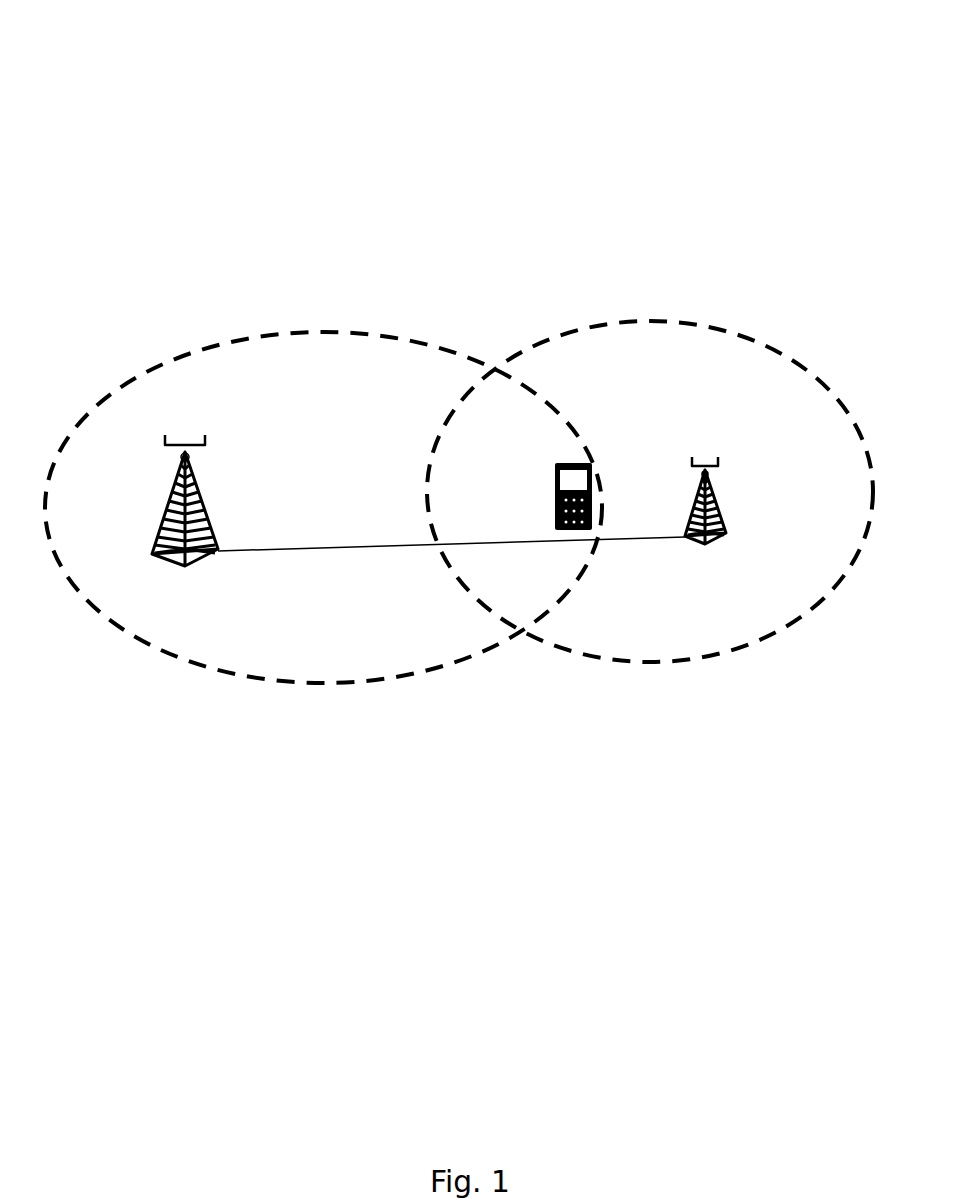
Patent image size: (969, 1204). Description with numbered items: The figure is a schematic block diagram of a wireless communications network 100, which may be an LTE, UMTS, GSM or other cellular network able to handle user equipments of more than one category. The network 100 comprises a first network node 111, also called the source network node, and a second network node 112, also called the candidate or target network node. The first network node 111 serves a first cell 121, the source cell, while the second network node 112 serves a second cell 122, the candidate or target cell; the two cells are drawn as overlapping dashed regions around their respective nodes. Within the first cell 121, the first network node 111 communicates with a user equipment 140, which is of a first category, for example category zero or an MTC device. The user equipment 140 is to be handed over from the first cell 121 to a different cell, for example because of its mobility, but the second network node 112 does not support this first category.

The wireless communications network 100 is at (479, 167).
The first network node 111 is at (166, 446).
The second network node 112 is at (719, 464).
The first cell 121 is at (141, 641).
The second cell 122 is at (590, 656).
The user equipment 140 is at (554, 473).